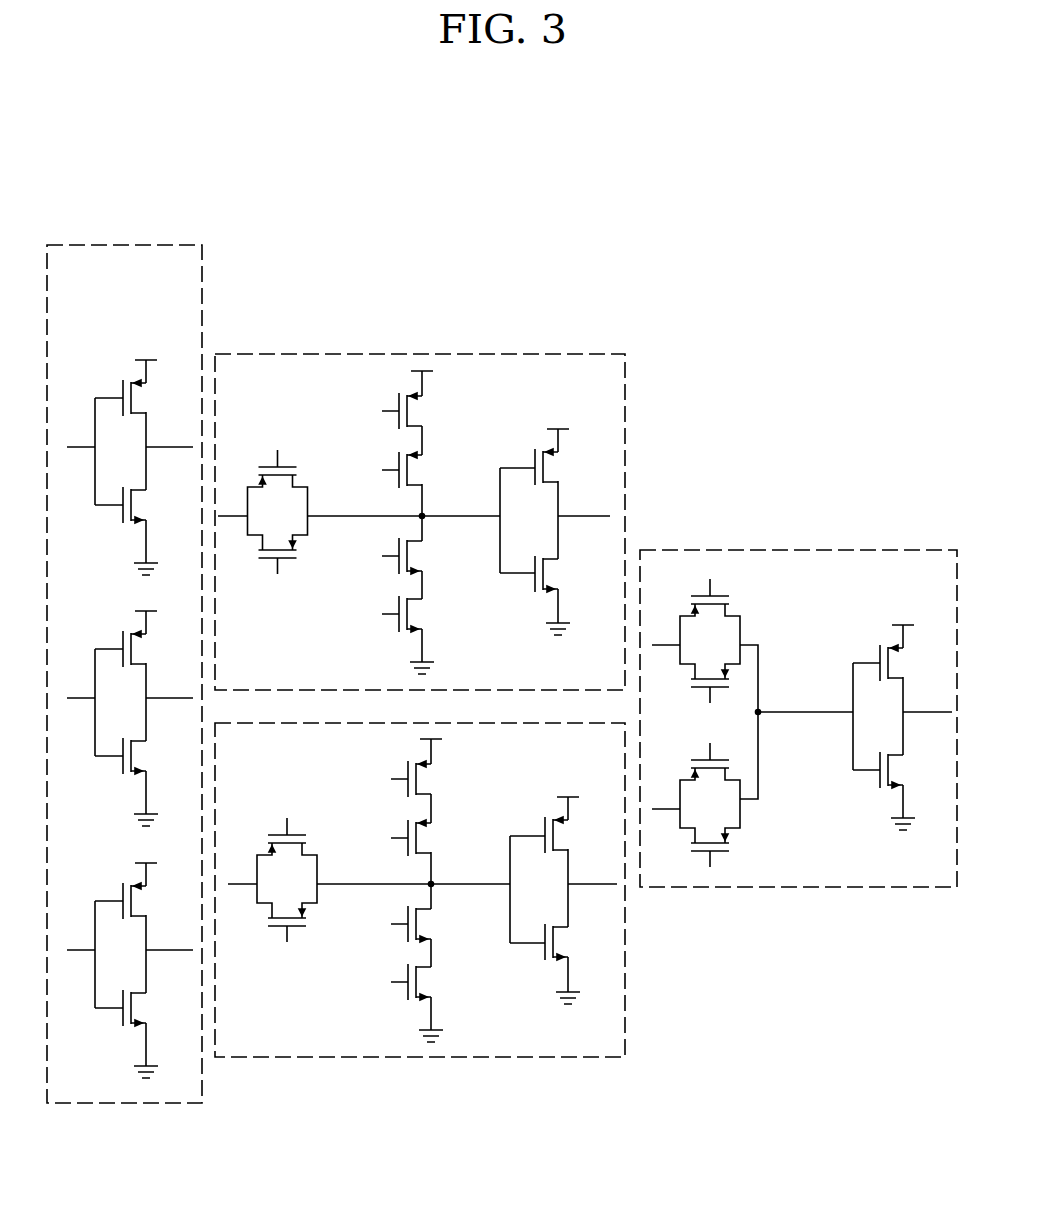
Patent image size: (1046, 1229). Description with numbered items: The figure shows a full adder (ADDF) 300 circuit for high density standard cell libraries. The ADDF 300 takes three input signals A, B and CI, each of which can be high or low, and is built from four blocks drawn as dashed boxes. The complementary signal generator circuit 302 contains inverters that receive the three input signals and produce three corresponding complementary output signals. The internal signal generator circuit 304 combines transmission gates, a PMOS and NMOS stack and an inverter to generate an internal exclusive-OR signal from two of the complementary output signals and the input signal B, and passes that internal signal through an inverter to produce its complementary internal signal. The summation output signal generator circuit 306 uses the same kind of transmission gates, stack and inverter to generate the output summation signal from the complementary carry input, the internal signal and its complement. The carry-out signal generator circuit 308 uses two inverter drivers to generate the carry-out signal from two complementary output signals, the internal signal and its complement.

The full adder (ADDF) circuit 300 is at (455, 260).
The complementary signal generator circuit 302 is at (147, 307).
The internal signal generator circuit 304 is at (590, 398).
The SUM output signal generator circuit 306 is at (515, 1043).
The CO signal generator circuit 308 is at (847, 862).